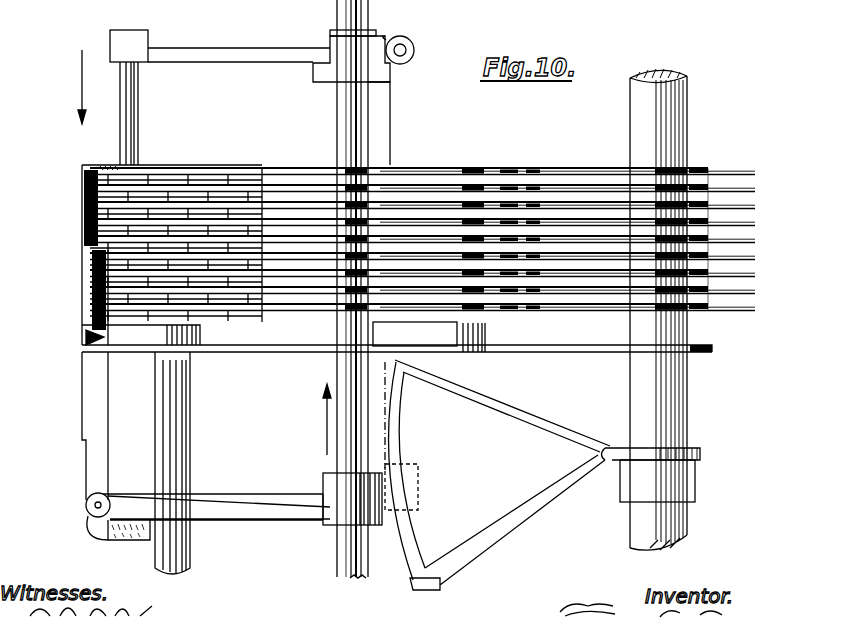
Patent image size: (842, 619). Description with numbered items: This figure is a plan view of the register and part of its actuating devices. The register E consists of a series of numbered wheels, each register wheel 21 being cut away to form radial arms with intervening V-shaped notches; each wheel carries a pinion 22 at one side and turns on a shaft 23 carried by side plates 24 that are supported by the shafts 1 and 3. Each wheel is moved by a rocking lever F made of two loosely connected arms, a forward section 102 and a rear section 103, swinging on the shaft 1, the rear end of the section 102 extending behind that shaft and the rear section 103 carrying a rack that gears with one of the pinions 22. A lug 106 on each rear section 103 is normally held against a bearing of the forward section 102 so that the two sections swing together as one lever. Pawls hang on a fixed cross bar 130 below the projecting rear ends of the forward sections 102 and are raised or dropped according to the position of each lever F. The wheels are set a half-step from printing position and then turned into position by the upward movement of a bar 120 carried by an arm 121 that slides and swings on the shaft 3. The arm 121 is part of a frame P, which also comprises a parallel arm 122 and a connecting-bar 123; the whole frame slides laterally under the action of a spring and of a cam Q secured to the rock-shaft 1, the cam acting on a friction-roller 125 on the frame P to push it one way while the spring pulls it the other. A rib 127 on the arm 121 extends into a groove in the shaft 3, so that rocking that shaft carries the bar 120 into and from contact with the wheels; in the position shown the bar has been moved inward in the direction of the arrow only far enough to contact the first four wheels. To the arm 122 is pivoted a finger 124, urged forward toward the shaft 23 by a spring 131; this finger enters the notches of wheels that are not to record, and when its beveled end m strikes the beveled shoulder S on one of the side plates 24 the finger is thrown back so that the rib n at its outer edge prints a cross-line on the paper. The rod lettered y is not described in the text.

The rock-shaft 1 is at (630, 152).
The shaft 3 is at (343, 376).
The register wheel 21 is at (84, 187).
The pinion 22 is at (168, 176).
The shaft 23 is at (185, 463).
The side plates 24 is at (240, 167).
The forward lever section 102 is at (740, 186).
The rear lever section 103 is at (294, 172).
The lug 106 is at (475, 175).
The bar 120 is at (138, 124).
The arm 121 is at (232, 60).
The parallel arm 122 is at (272, 522).
The connecting-bar 123 is at (386, 139).
The finger 124 is at (106, 412).
The friction-roller 125 is at (400, 480).
The rib 127 is at (370, 30).
The fixed cross bar 130 is at (486, 353).
The spring 131 is at (112, 541).
The frame P is at (322, 289).
The cam Q is at (530, 512).
The beveled shoulder S is at (101, 165).
The register E is at (53, 230).
The rocking lever F is at (747, 340).
The beveled end m is at (95, 250).
The rib n is at (82, 410).
The rod y is at (425, 173).